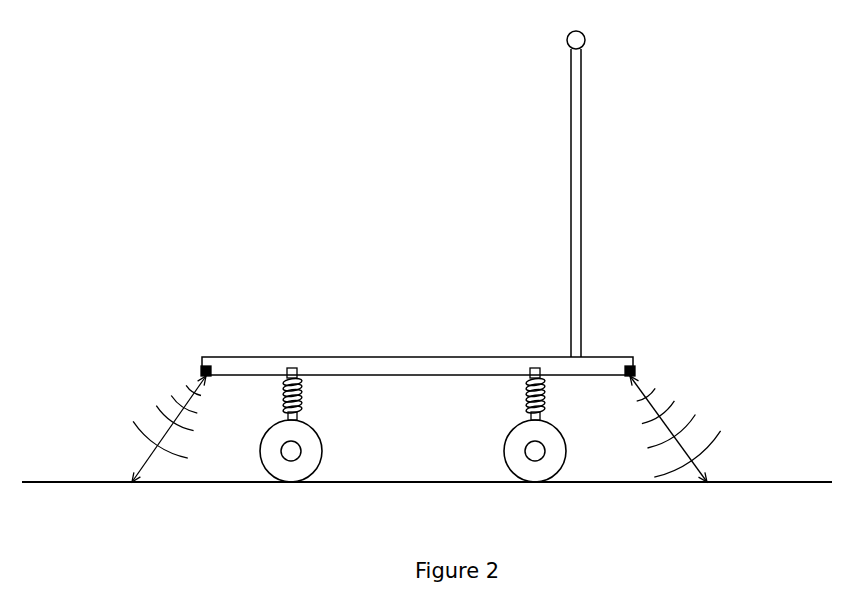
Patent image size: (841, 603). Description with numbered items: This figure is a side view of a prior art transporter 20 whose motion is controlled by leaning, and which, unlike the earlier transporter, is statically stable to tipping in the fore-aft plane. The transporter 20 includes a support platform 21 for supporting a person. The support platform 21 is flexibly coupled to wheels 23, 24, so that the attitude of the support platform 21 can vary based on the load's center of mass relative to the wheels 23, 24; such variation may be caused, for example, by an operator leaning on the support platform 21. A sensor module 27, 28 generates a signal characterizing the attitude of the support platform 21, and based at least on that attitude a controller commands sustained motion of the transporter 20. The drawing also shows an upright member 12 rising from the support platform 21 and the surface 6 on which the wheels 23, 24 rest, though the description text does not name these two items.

The ground surface 6 is at (132, 480).
The antenna mast 12 is at (590, 53).
The transporter 20 is at (681, 212).
The support platform 21 is at (342, 365).
The wheel 23 is at (323, 448).
The wheel 24 is at (567, 453).
The sensor module 27 is at (633, 367).
The sensor module 28 is at (203, 367).